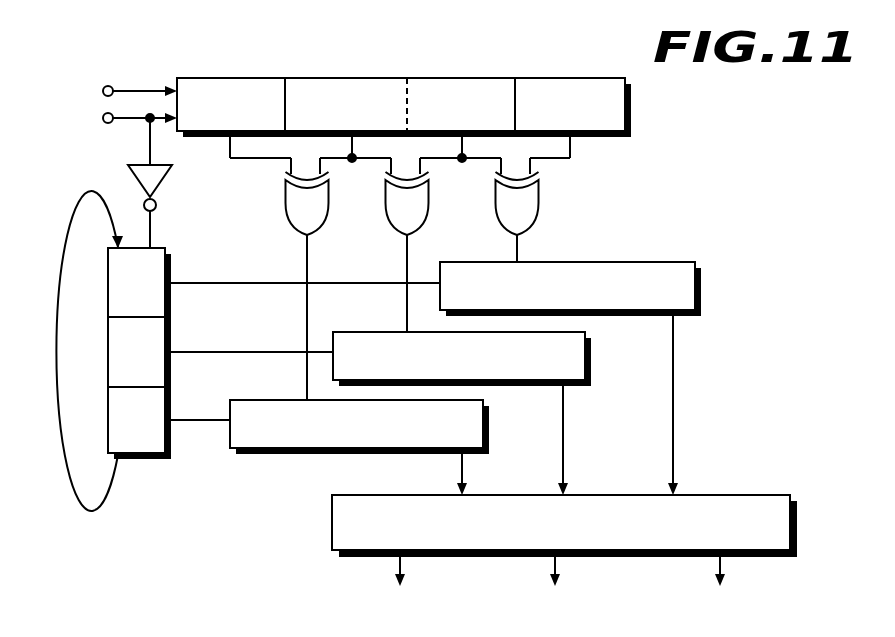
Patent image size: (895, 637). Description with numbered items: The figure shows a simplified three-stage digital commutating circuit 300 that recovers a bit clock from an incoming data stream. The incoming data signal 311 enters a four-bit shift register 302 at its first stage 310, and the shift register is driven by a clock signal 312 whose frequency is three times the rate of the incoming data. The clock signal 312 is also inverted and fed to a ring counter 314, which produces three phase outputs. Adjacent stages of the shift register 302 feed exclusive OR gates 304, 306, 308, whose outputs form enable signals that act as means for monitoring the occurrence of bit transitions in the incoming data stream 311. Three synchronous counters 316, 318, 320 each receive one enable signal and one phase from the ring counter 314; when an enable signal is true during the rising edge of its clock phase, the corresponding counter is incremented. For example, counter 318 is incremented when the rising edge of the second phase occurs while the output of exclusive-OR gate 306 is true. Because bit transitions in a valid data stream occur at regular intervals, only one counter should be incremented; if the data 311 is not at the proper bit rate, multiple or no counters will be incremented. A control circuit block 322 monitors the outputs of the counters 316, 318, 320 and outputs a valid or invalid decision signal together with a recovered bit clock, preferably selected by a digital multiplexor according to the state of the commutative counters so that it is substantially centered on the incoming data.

The three-stage digital commutating circuit 300 is at (792, 140).
The four-bit shift register 302 is at (632, 110).
The exclusive OR gate 304 is at (307, 286).
The exclusive OR gate 306 is at (407, 252).
The exclusive OR gate 308 is at (558, 192).
The first stage of the shift register 310 is at (257, 88).
The incoming data signal 311 is at (137, 89).
The clock signal 312 is at (140, 121).
The ring counter 314 is at (168, 254).
The synchronous counter 316 is at (701, 289).
The synchronous counter 318 is at (592, 358).
The synchronous counter 320 is at (489, 426).
The control circuit block 322 is at (332, 526).